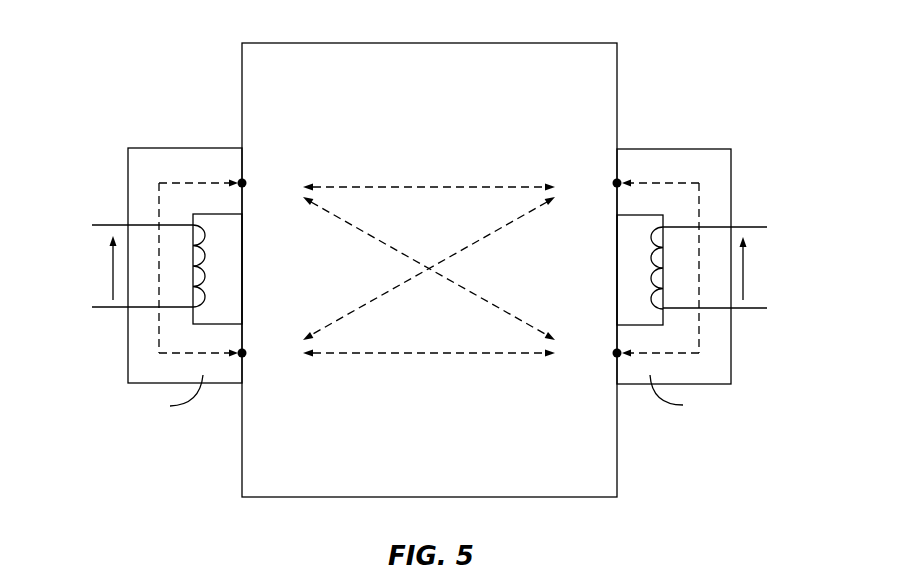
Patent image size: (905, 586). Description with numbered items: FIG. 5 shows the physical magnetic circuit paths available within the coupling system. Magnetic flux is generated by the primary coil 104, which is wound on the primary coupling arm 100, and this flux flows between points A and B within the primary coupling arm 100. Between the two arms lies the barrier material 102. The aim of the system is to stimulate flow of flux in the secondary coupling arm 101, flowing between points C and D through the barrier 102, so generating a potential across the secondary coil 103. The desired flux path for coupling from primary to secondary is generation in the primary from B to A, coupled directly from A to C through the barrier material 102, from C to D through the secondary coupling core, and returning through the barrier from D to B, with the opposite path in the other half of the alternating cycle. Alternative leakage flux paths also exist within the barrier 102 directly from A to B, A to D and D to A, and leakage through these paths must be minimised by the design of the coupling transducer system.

The coupling arm 100 is at (186, 148).
The secondary coupling arm 101 is at (675, 149).
The barrier material 102 is at (322, 67).
The secondary coil 103 is at (750, 309).
The primary coil 104 is at (113, 309).